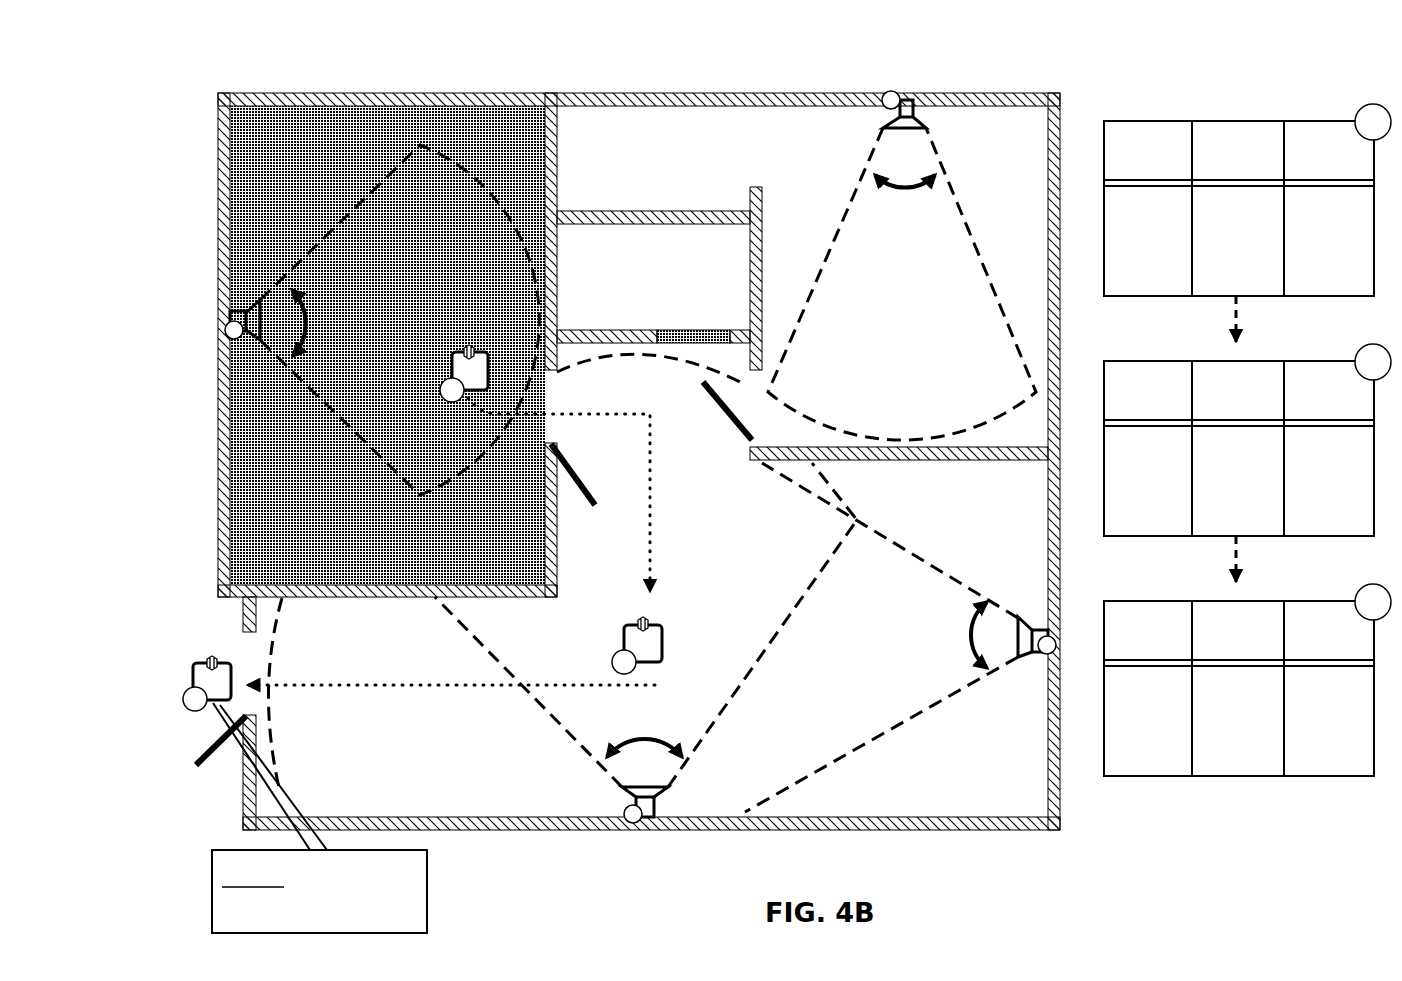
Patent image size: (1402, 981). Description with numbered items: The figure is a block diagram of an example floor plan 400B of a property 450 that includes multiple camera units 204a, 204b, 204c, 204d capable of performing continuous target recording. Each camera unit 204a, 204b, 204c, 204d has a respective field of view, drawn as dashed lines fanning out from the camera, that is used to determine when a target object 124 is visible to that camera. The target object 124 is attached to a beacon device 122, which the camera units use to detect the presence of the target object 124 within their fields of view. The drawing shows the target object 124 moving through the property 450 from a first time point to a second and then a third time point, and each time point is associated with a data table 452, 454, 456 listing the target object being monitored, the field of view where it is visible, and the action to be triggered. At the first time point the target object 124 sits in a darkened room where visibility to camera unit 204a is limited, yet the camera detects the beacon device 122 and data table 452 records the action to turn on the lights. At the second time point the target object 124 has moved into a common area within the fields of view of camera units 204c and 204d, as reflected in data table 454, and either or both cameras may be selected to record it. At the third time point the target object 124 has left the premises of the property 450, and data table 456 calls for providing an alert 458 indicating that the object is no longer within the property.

The environment / premises floor plan 400B is at (845, 37).
The beacon device 122 is at (467, 346).
The target object 124 is at (452, 367).
The camera unit 204a is at (230, 313).
The camera unit 204b is at (885, 91).
The camera unit 204c is at (632, 825).
The camera unit 204d is at (1045, 660).
The property 450 is at (1005, 93).
The data table 452 is at (1302, 120).
The data table 454 is at (1302, 360).
The data table 456 is at (1302, 600).
The alert 458 is at (424, 905).